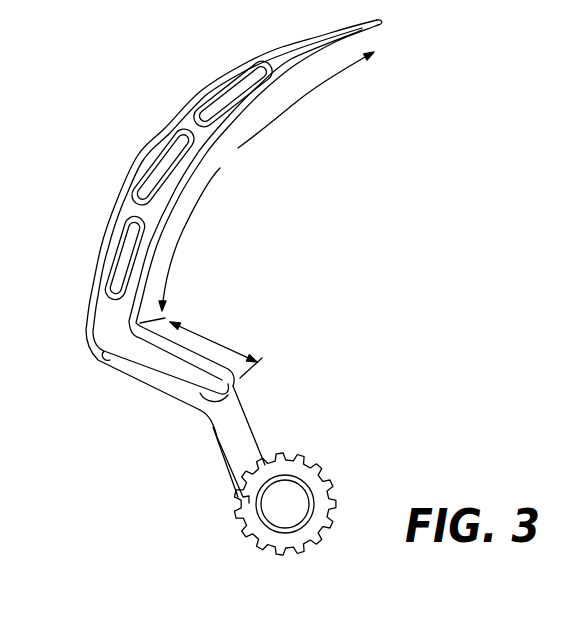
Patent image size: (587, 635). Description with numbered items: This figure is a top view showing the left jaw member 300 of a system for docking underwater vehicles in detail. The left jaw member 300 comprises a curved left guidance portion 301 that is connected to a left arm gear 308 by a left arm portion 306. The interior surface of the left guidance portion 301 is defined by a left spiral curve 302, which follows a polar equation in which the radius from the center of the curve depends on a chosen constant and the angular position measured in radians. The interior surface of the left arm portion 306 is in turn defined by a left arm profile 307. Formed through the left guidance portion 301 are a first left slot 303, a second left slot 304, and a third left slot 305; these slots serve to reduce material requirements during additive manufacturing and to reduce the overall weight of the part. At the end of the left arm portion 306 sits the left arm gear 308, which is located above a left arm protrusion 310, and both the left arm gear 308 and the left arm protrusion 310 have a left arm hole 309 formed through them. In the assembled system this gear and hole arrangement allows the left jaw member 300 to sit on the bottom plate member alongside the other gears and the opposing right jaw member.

The left jaw member 300 is at (438, 94).
The left guidance portion 301 is at (112, 323).
The left spiral curve 302 is at (266, 181).
The first left slot 303 is at (227, 107).
The second left slot 304 is at (155, 182).
The third left slot 305 is at (128, 242).
The left arm portion 306 is at (238, 452).
The left arm profile 307 is at (205, 342).
The left arm gear 308 is at (290, 460).
The left arm hole 309 is at (282, 503).
The left arm protrusion 310 is at (267, 530).